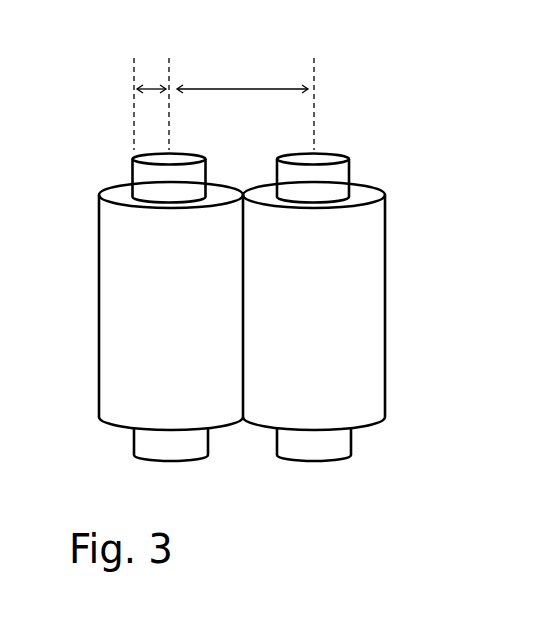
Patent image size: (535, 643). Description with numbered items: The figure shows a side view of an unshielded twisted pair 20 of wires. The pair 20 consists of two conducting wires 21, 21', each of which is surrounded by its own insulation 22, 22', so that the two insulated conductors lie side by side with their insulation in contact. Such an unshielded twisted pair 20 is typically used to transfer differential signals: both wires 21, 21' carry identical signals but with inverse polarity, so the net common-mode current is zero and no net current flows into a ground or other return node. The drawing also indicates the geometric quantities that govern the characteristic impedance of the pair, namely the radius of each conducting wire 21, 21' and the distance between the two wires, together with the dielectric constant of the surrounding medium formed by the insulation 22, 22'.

The unshielded twisted pair 20 is at (386, 90).
The wire 21 is at (362, 178).
The wire 21' is at (119, 178).
The insulation 22 is at (348, 321).
The insulation 22' is at (144, 321).